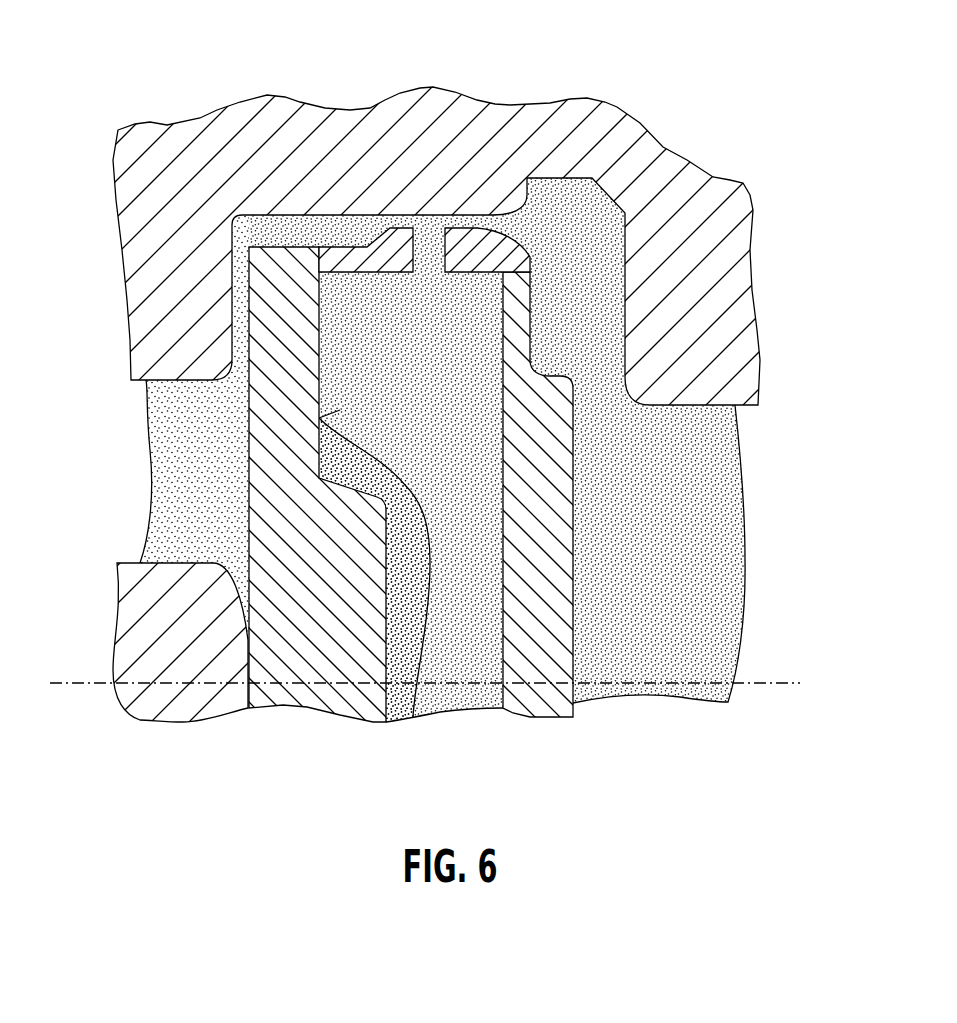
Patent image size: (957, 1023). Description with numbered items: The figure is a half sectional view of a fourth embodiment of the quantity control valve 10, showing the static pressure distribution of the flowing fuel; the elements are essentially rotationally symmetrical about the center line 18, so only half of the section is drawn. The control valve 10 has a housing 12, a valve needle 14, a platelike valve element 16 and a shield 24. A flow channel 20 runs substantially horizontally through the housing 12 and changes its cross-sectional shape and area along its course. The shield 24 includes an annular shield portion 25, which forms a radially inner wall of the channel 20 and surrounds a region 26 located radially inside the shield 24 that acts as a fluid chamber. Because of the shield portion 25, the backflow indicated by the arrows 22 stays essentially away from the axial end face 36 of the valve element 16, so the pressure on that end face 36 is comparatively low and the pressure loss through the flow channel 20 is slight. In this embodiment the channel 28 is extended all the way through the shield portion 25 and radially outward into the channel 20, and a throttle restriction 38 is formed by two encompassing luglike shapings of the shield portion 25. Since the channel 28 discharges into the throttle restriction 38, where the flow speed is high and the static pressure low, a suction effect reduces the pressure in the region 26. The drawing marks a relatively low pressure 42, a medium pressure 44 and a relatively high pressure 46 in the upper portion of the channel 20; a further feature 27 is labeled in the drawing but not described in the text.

The quantity control valve 10 is at (732, 81).
The housing 12 is at (167, 187).
The valve needle 14 is at (180, 637).
The platelike valve element 16 is at (307, 643).
The center line 18 is at (783, 693).
The flow channel 20 is at (640, 322).
The arrows 22 is at (112, 470).
The shield 24 is at (590, 563).
The annular shield portion 25 is at (345, 262).
The region 26 is at (462, 442).
The gap 27 is at (317, 222).
The channel 28 is at (427, 216).
The axial end face 36 is at (413, 717).
The throttle restriction 38 is at (405, 204).
The relatively low pressure 42 is at (192, 507).
The medium pressure 44 is at (587, 257).
The relatively high pressure 46 is at (643, 633).